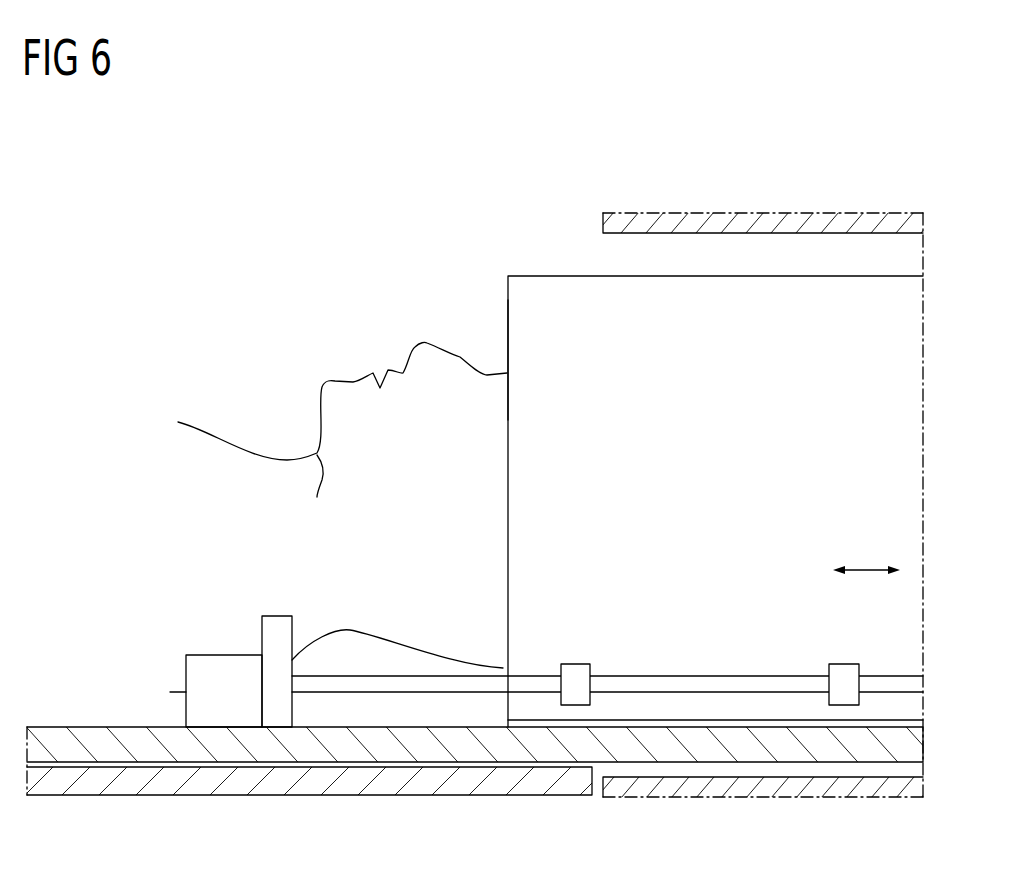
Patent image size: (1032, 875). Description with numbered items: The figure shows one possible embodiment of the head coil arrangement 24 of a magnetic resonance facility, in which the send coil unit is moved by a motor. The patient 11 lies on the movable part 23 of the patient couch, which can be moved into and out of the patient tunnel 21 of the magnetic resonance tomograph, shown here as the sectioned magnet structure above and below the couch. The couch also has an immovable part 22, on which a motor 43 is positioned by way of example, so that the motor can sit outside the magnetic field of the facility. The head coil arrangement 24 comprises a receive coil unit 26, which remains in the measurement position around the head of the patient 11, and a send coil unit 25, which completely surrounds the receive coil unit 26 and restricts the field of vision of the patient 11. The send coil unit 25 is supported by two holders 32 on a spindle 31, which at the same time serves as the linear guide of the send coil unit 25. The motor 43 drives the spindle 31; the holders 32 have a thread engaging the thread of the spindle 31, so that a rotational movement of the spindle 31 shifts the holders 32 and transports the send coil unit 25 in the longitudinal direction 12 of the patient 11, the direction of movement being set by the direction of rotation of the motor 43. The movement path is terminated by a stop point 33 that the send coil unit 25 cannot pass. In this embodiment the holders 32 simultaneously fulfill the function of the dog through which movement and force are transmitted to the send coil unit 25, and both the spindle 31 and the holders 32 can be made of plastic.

The patient 11 is at (200, 420).
The longitudinal direction 12 is at (870, 566).
The patient tunnel 21 is at (700, 232).
The immovable part of the patient couch 22 is at (90, 797).
The movable part of the patient couch 23 is at (90, 737).
The head coil arrangement 24 is at (360, 275).
The send coil unit 25 is at (553, 274).
The receive coil unit 26 is at (506, 327).
The spindle 31 is at (675, 676).
The holders 32 is at (577, 664).
The stop point 33 is at (277, 616).
The motor 43 is at (222, 655).